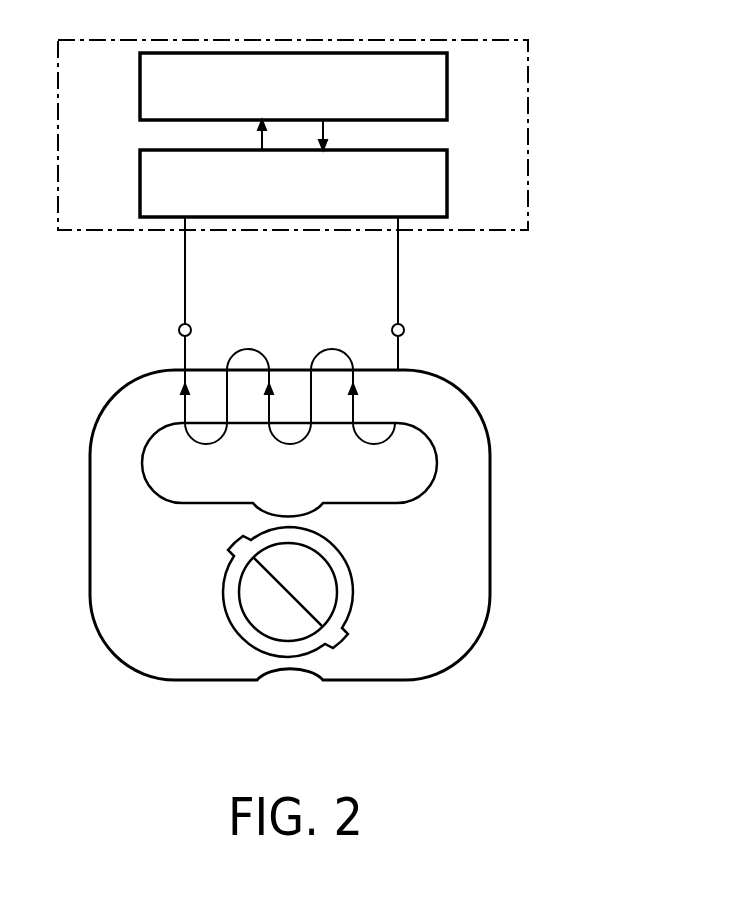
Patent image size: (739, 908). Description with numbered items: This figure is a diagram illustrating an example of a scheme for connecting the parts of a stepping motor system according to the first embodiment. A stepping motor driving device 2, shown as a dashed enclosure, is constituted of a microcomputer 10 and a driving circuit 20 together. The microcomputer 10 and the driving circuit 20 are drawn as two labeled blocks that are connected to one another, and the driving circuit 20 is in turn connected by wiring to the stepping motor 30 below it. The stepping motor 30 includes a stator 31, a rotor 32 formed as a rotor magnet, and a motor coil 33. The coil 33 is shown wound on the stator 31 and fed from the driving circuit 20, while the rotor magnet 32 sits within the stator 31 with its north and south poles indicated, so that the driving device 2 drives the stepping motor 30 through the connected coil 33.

The stepping motor driving device 2 is at (528, 63).
The microcomputer 10 is at (447, 87).
The driving circuit 20 is at (447, 183).
The stepping motor 30 is at (490, 527).
The stator 31 is at (458, 650).
The rotor 32 is at (289, 640).
The motor coil 33 is at (398, 353).